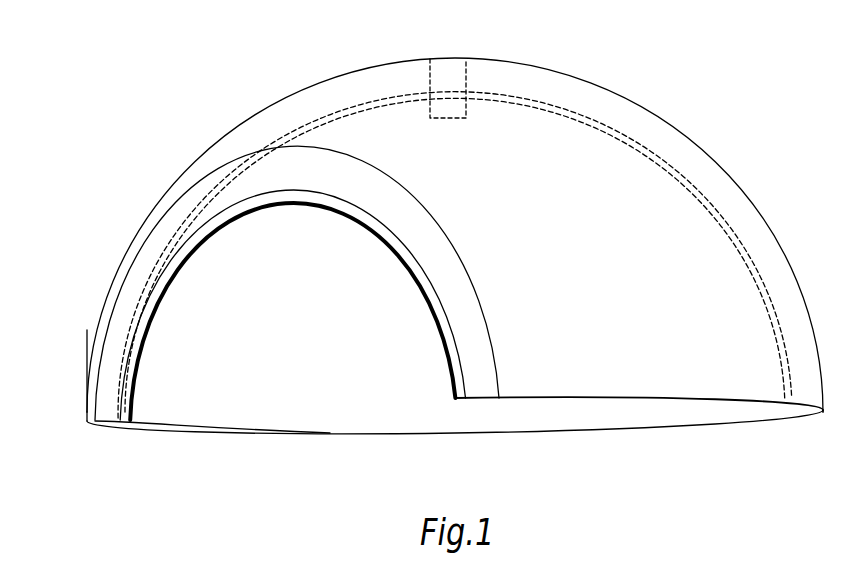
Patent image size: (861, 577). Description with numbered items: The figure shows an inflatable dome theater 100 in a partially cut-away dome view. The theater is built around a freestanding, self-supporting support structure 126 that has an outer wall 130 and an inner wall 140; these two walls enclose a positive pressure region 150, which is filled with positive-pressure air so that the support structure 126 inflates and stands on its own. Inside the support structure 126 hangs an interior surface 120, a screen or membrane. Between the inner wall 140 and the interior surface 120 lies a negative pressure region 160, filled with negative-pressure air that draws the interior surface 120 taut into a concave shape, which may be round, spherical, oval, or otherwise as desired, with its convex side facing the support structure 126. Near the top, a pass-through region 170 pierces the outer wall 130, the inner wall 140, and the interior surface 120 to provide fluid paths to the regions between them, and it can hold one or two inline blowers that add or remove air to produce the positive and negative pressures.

The inflatable dome theater 100 is at (145, 89).
The interior surface 120 is at (443, 410).
The support structure 126 is at (252, 127).
The outer wall 130 is at (103, 320).
The inner wall 140 is at (451, 326).
The positive pressure region 150 is at (108, 350).
The negative pressure region 160 is at (126, 424).
The pass-through region 170 is at (467, 70).